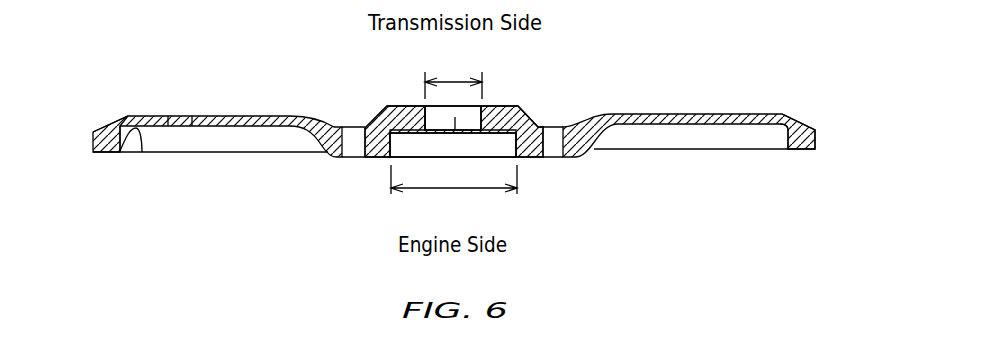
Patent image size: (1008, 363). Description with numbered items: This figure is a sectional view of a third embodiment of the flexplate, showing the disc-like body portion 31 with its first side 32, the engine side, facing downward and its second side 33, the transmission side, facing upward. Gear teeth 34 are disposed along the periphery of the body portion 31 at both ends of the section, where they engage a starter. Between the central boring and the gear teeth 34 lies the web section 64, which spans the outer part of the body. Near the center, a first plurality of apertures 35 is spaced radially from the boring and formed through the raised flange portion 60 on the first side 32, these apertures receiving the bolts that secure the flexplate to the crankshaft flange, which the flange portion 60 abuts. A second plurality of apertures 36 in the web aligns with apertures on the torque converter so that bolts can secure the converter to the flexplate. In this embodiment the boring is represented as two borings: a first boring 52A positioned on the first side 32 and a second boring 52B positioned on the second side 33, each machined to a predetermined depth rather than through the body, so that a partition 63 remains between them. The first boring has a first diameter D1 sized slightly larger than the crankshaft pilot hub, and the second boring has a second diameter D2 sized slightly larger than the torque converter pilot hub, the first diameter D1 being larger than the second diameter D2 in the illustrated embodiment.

The second side 33 is at (218, 113).
The second plurality of apertures 36 is at (181, 115).
The gear teeth 34 is at (107, 155).
The body portion 31 is at (131, 128).
The first side 32 is at (218, 129).
The first plurality of apertures 35 is at (352, 137).
The flange portion 60 is at (378, 160).
The first boring 52A is at (388, 140).
The second boring 52B is at (420, 107).
The partition 63 is at (418, 148).
The first diameter D1 is at (453, 188).
The second diameter D2 is at (456, 74).
The web section 64 is at (693, 118).